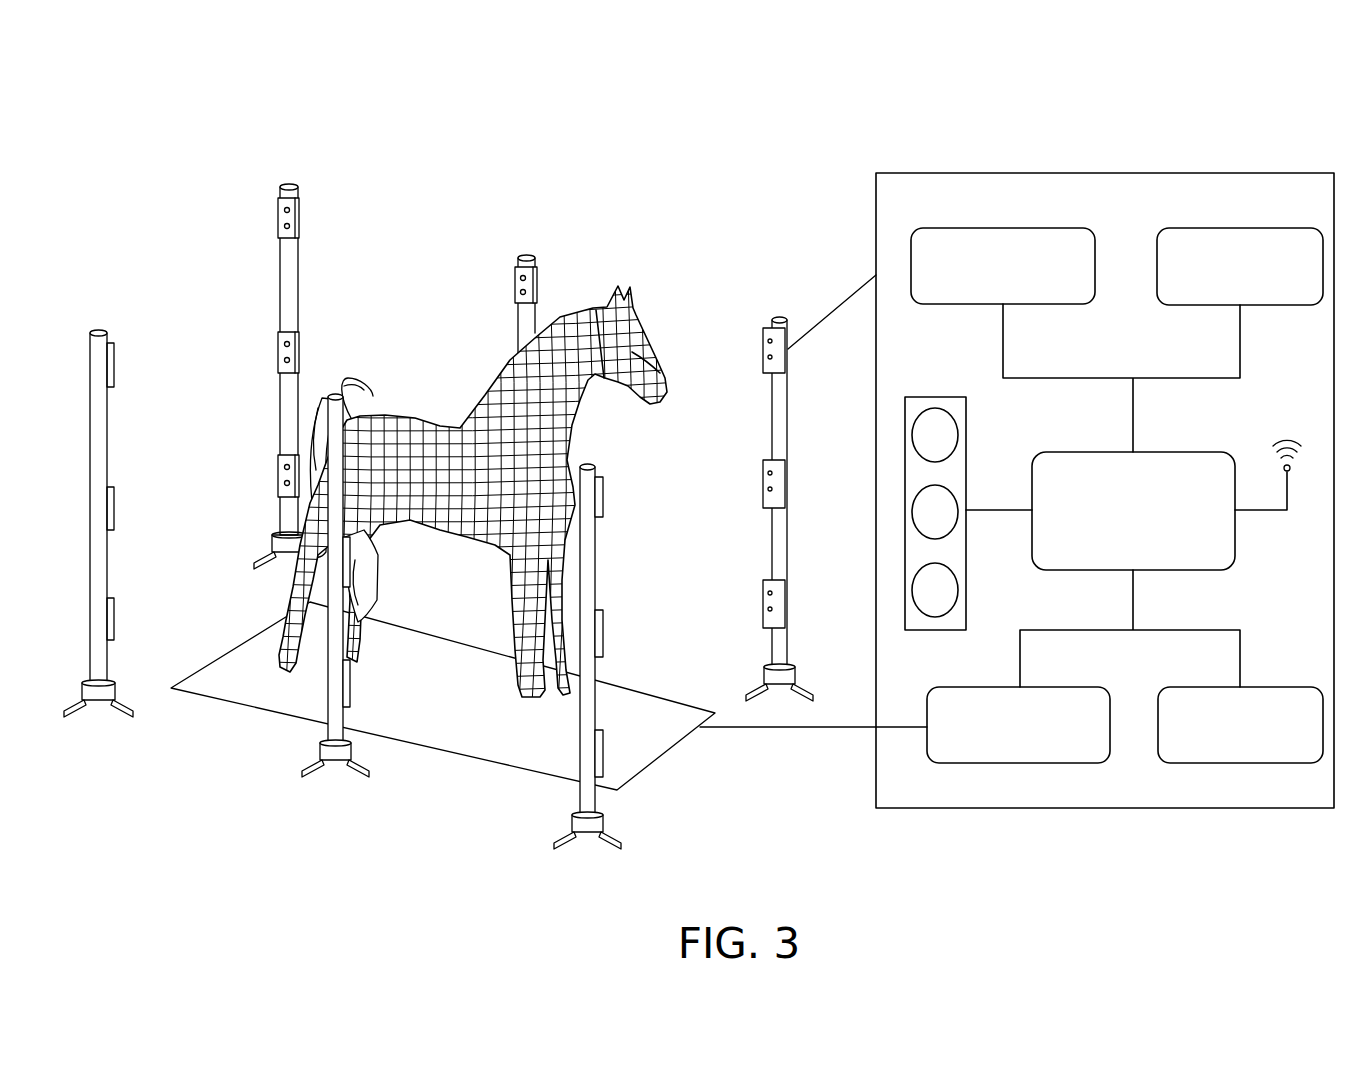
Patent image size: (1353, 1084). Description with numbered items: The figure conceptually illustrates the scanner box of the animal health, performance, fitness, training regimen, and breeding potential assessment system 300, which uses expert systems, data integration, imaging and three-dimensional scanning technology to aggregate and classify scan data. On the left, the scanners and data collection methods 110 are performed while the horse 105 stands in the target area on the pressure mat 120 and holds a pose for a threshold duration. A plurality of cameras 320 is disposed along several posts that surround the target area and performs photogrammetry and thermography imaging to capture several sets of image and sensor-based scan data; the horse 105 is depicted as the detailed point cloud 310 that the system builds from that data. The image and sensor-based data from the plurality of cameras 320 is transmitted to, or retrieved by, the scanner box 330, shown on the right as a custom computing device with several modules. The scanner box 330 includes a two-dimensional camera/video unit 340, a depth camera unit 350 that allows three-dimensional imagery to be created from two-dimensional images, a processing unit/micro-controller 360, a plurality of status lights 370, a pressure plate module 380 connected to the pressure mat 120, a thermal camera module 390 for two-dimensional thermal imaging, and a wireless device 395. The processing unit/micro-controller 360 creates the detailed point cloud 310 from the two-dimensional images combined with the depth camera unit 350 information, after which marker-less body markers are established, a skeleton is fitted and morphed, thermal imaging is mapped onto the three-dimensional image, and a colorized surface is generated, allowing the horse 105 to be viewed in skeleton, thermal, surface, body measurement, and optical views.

The animal health, performance, fitness, training regimen, and breeding potential as 300 is at (548, 146).
The scanners and data collection methods 110 is at (346, 172).
The plurality of cameras 320 is at (113, 362).
The horse 105 is at (578, 302).
The detailed point cloud 310 is at (404, 450).
The pressure mat 120 is at (228, 688).
The scanner box 330 is at (1108, 808).
The two-dimensional camera/video unit 340 is at (1003, 266).
The depth camera unit 350 is at (1240, 266).
The processing unit/micro-controller 360 is at (1133, 511).
The plurality of status lights 370 is at (966, 432).
The pressure plate module 380 is at (1049, 687).
The thermal camera module 390 is at (1253, 687).
The wireless device 395 is at (1292, 487).